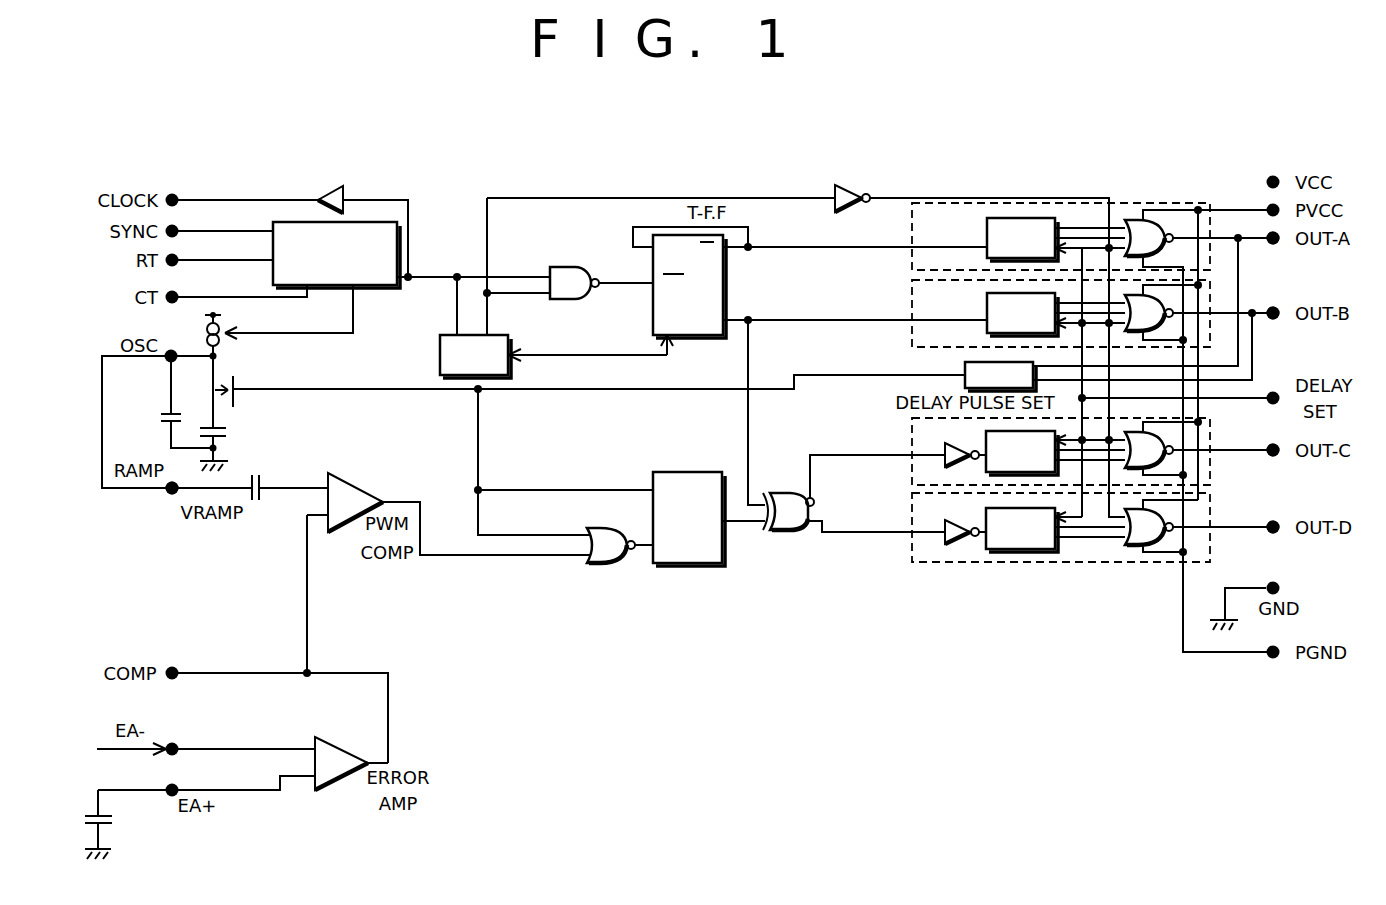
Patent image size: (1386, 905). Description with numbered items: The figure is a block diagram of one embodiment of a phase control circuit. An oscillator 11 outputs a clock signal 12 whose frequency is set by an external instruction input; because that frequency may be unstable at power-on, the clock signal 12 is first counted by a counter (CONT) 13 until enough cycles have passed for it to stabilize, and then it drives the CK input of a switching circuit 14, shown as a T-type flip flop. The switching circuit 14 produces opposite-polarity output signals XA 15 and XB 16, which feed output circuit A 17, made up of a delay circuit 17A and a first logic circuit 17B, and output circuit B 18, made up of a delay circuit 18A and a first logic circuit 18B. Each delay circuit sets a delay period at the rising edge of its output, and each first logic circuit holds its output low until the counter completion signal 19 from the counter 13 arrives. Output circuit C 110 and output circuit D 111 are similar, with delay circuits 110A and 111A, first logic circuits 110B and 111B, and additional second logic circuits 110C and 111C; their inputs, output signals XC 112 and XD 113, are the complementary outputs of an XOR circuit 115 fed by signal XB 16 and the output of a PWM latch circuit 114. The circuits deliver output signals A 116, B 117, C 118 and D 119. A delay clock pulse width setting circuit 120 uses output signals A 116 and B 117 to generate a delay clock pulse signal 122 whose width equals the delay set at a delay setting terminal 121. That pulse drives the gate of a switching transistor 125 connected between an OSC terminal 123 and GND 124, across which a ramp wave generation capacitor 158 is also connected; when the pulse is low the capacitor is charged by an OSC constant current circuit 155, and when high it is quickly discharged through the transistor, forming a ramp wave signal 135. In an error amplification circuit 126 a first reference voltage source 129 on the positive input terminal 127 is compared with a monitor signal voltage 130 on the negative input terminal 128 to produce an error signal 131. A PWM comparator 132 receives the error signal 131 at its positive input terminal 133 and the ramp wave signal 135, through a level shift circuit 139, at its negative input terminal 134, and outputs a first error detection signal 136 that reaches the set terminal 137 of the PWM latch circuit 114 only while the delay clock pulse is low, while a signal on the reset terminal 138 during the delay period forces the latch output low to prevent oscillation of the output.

The oscillator 11 is at (385, 222).
The clock signal 12 is at (515, 276).
The counter (CONT) 13 is at (497, 335).
The switching circuit 14 is at (725, 287).
The output signal XA 15 is at (803, 247).
The output signal XB 16 is at (820, 320).
The output circuit A 17 is at (907, 223).
The delay circuit 17A is at (1018, 218).
The first logic circuit 17B is at (1143, 218).
The output circuit B 18 is at (907, 303).
The delay circuit 18A is at (987, 312).
The first logic circuit 18B is at (1177, 305).
The counter completion signal 19 is at (558, 198).
The output circuit C 110 is at (908, 428).
The delay circuit 110A is at (986, 447).
The first logic circuit 110B is at (1175, 441).
The second logic circuit 110C is at (943, 450).
The output circuit D 111 is at (987, 563).
The delay circuit 111A is at (1040, 550).
The first logic circuit 111B is at (1122, 550).
The second logic circuit 111C is at (942, 550).
The output signal XC 112 is at (860, 455).
The output signal XD 113 is at (862, 533).
The PWM latch circuit 114 is at (700, 472).
The XOR circuit 115 is at (787, 530).
The output signal A 116 is at (1280, 243).
The output signal B 117 is at (1283, 318).
The output signal C 118 is at (1268, 455).
The output signal D 119 is at (1275, 521).
The delay clock pulse width setting circuit 120 is at (963, 366).
The delay setting terminal 121 is at (1273, 392).
The delay clock pulse signal 122 is at (643, 388).
The OSC terminal 123 is at (168, 360).
The GND 124 is at (232, 459).
The switching transistor 125 is at (245, 380).
The error amplification circuit 126 is at (332, 790).
The positive input terminal 127 is at (315, 789).
The negative input terminal 128 is at (313, 737).
The first reference voltage source 129 is at (108, 817).
The monitor signal voltage 130 is at (97, 748).
The error signal 131 is at (242, 673).
The PWM comparator 132 is at (363, 486).
The positive input terminal 133 is at (330, 527).
The negative input terminal 134 is at (328, 478).
The ramp wave signal 135 is at (163, 496).
The first error detection signal 136 is at (470, 557).
The set terminal 137 is at (648, 557).
The reset terminal 138 is at (650, 482).
The level shift circuit 139 is at (253, 507).
The OSC constant current circuit 155 is at (228, 326).
The ramp wave generation capacitor 158 is at (158, 416).